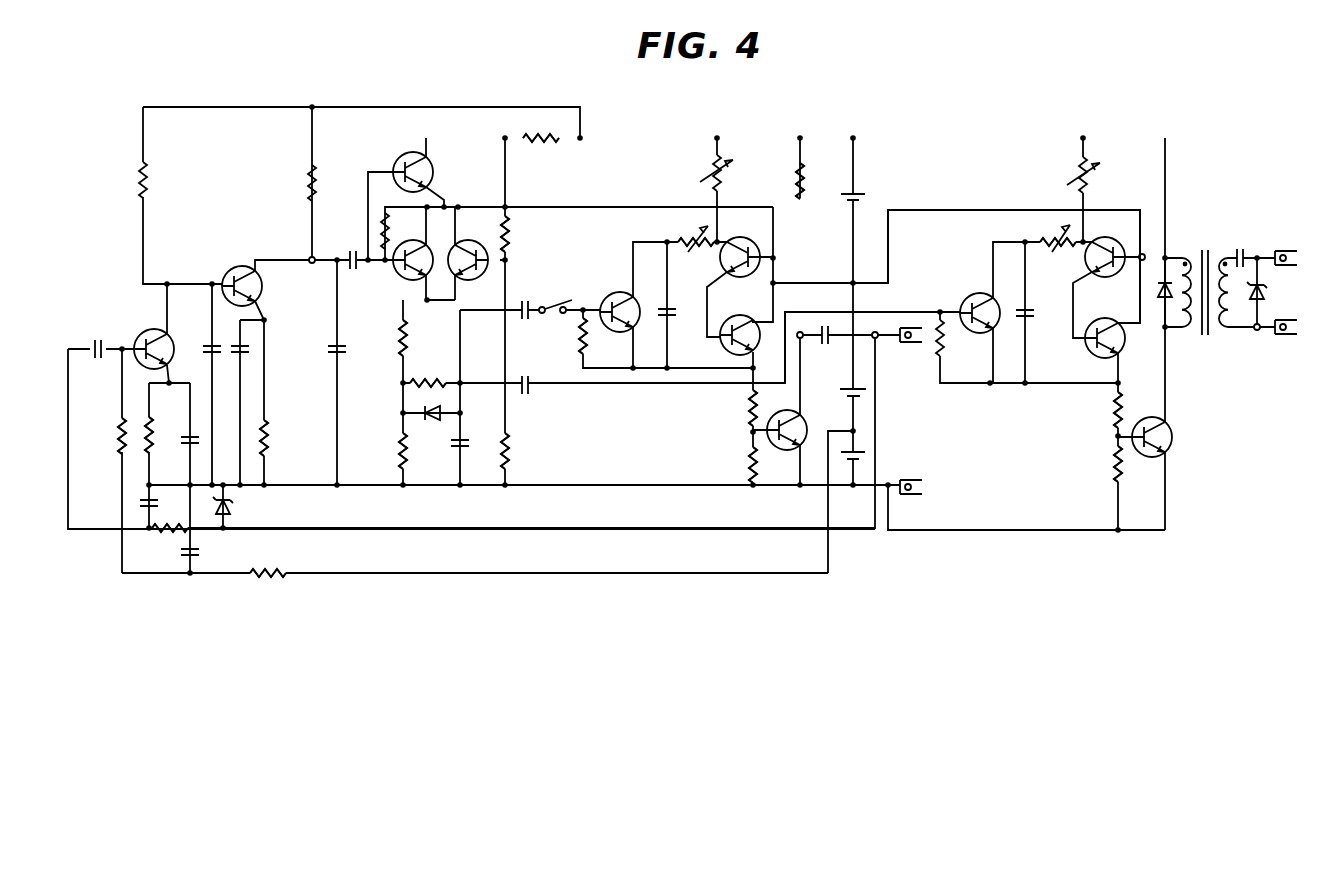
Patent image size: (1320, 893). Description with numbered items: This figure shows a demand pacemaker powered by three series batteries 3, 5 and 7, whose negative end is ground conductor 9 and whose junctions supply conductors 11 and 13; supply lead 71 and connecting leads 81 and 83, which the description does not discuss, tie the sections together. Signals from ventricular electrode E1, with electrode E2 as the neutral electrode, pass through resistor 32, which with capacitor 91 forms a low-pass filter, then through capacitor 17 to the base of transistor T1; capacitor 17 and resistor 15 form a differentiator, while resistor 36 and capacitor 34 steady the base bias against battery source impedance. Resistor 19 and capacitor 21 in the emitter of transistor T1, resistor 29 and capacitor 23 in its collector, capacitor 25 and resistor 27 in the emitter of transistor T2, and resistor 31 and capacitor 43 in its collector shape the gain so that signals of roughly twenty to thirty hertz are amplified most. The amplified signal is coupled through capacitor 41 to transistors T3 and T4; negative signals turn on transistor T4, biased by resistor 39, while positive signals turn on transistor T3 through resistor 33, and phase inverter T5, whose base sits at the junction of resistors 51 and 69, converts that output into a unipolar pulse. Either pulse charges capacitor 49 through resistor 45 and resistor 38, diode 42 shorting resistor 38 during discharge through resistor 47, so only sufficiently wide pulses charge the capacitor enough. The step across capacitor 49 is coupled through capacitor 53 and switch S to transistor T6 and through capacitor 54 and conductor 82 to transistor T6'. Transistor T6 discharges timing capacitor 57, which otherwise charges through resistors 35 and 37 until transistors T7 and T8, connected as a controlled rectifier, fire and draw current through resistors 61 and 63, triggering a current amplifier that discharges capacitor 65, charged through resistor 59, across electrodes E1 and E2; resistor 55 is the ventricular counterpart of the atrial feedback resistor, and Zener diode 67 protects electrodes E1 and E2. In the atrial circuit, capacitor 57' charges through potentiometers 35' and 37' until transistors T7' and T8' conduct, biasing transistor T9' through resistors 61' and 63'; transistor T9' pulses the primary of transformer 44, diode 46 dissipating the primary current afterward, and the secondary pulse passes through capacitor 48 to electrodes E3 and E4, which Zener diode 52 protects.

The battery 3 is at (866, 454).
The battery 5 is at (866, 396).
The battery 7 is at (844, 198).
The conductor 9 is at (618, 479).
The conductor 11 is at (618, 527).
The conductor 13 is at (620, 569).
The resistor 15 is at (114, 438).
The capacitor 17 is at (100, 336).
The resistor 19 is at (154, 430).
The capacitor 21 is at (182, 443).
The capacitor 23 is at (201, 340).
The capacitor 25 is at (251, 350).
The resistor 27 is at (270, 434).
The resistor 29 is at (150, 176).
The resistor 31 is at (310, 184).
The resistor 32 is at (168, 534).
The resistor 33 is at (542, 143).
The capacitor 34 is at (200, 550).
The resistor 35 is at (700, 171).
The potentiometer 35' is at (1067, 171).
The resistor 36 is at (278, 564).
The resistor 37 is at (679, 231).
The potentiometer 37' is at (1030, 234).
The resistor 38 is at (447, 380).
The bias resistor 39 is at (384, 214).
The capacitor 41 is at (353, 247).
The diode 42 is at (409, 410).
The capacitor 43 is at (326, 342).
The transformer 44 is at (1205, 242).
The resistor 45 is at (400, 340).
The diode 46 is at (1165, 315).
The resistor 47 is at (392, 447).
The capacitor 48 is at (1239, 250).
The capacitor 49 is at (450, 445).
The resistor 51 is at (511, 442).
The Zener diode 52 is at (1260, 291).
The capacitor 53 is at (524, 302).
The capacitor 54 is at (525, 377).
The resistor 55 is at (585, 340).
The capacitor 57 is at (676, 294).
The capacitor 57' is at (1038, 328).
The resistor 59 is at (796, 182).
The resistor 61 is at (728, 408).
The resistor 61' is at (1092, 410).
The resistor 63 is at (728, 463).
The resistor 63' is at (1092, 464).
The capacitor 65 is at (840, 348).
The Zener diode 67 is at (234, 510).
The resistor 69 is at (510, 240).
The supply lead 71 is at (332, 110).
The lead 81 is at (903, 226).
The conductor 82 is at (884, 312).
The lead 83 is at (914, 533).
The capacitor 91 is at (140, 501).
The transistor T1 is at (150, 332).
The transistor T2 is at (252, 260).
The transistor T3 is at (410, 152).
The transistor T4 is at (404, 287).
The phase inverter T5 is at (490, 282).
The transistor T6 is at (618, 298).
The transistor T6' is at (971, 300).
The transistor T7 is at (740, 242).
The transistor T7' is at (1086, 259).
The transistor T8 is at (719, 338).
The transistor T8' is at (1105, 323).
The transistor T9' is at (1173, 437).
The switch S is at (569, 302).
The electrode E1 is at (910, 347).
The electrode E2 is at (911, 478).
The electrode E3 is at (1286, 246).
The electrode E4 is at (1278, 337).